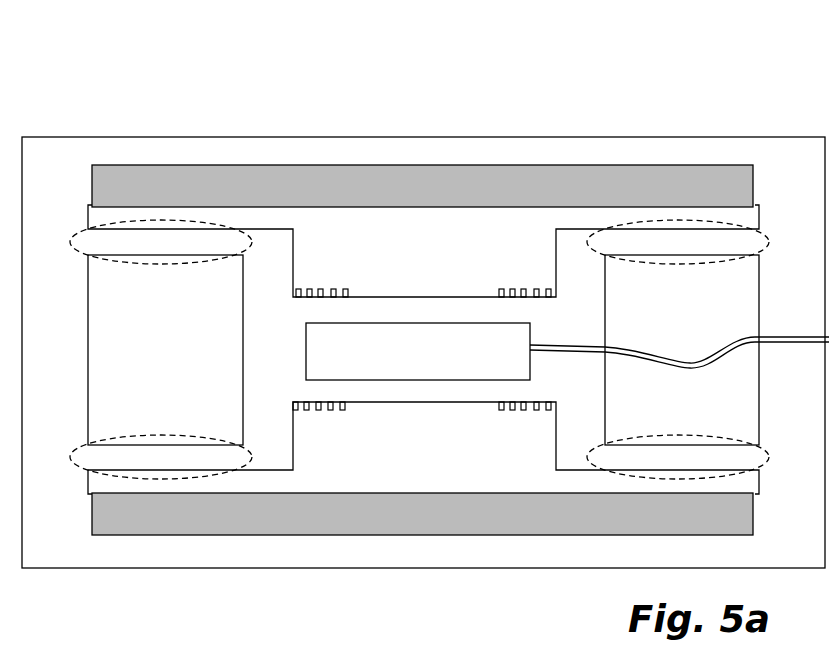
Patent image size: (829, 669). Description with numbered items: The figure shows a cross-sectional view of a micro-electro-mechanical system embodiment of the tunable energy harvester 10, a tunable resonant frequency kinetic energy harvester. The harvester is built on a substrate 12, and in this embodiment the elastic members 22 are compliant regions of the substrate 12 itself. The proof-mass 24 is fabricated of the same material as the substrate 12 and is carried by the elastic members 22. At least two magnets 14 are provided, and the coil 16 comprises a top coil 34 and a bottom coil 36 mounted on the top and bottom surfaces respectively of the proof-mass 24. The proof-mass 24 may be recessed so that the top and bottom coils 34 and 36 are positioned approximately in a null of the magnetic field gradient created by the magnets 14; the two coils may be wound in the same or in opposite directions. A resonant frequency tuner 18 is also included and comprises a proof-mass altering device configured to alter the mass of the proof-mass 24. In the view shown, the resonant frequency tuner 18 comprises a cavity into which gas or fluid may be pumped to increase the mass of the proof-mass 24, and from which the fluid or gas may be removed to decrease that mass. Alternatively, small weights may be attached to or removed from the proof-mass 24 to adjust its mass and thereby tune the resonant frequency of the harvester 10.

The tunable energy harvester 10 is at (126, 66).
The substrate 12 is at (704, 143).
The magnets 14 is at (407, 188).
The coil 16 is at (422, 352).
The resonant frequency tuner 18 is at (427, 362).
The elastic members 22 is at (160, 428).
The proof-mass 24 is at (243, 352).
The top coil 34 is at (500, 290).
The bottom coil 36 is at (500, 412).